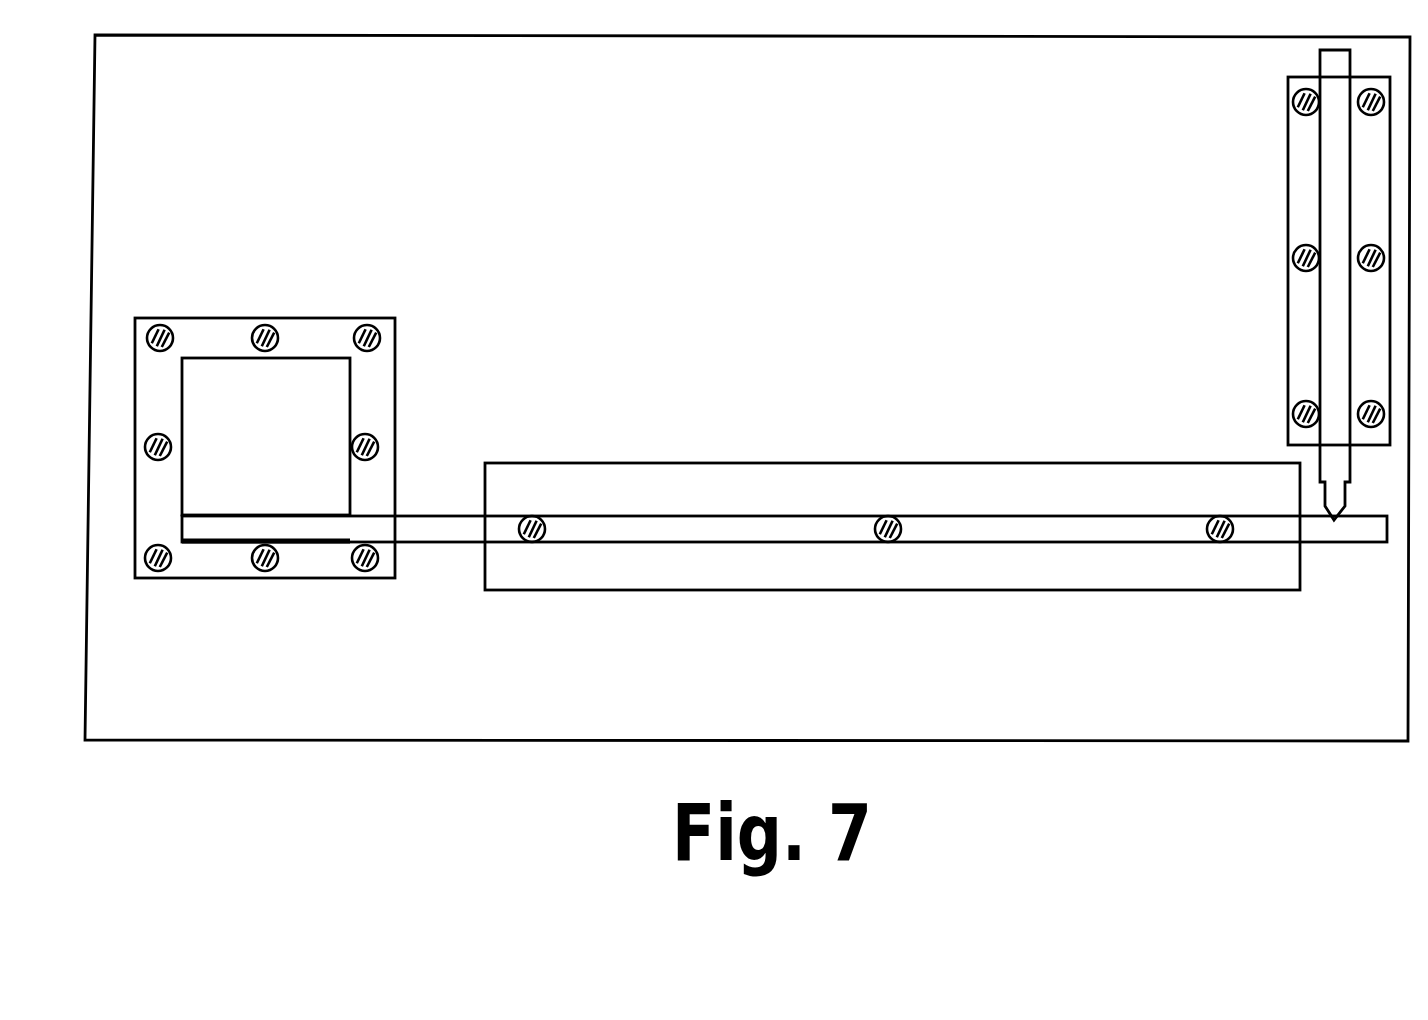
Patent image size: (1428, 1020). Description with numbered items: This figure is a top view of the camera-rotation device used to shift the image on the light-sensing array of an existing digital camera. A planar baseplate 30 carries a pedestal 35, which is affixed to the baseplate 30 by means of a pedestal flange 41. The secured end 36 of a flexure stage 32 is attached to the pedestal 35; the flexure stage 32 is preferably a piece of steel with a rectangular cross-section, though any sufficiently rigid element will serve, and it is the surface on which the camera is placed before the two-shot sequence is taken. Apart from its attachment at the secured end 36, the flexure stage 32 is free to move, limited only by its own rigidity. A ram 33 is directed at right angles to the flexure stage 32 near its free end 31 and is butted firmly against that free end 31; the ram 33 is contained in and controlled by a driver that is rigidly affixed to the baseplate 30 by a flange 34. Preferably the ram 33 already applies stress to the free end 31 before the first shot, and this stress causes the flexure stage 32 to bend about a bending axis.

The planar baseplate 30 is at (810, 137).
The free end 31 is at (1357, 548).
The flexure stage 32 is at (690, 593).
The ram 33 is at (1322, 500).
The flange 34 is at (1287, 182).
The pedestal 35 is at (231, 340).
The secured end 36 is at (212, 545).
The pedestal flange 41 is at (399, 359).